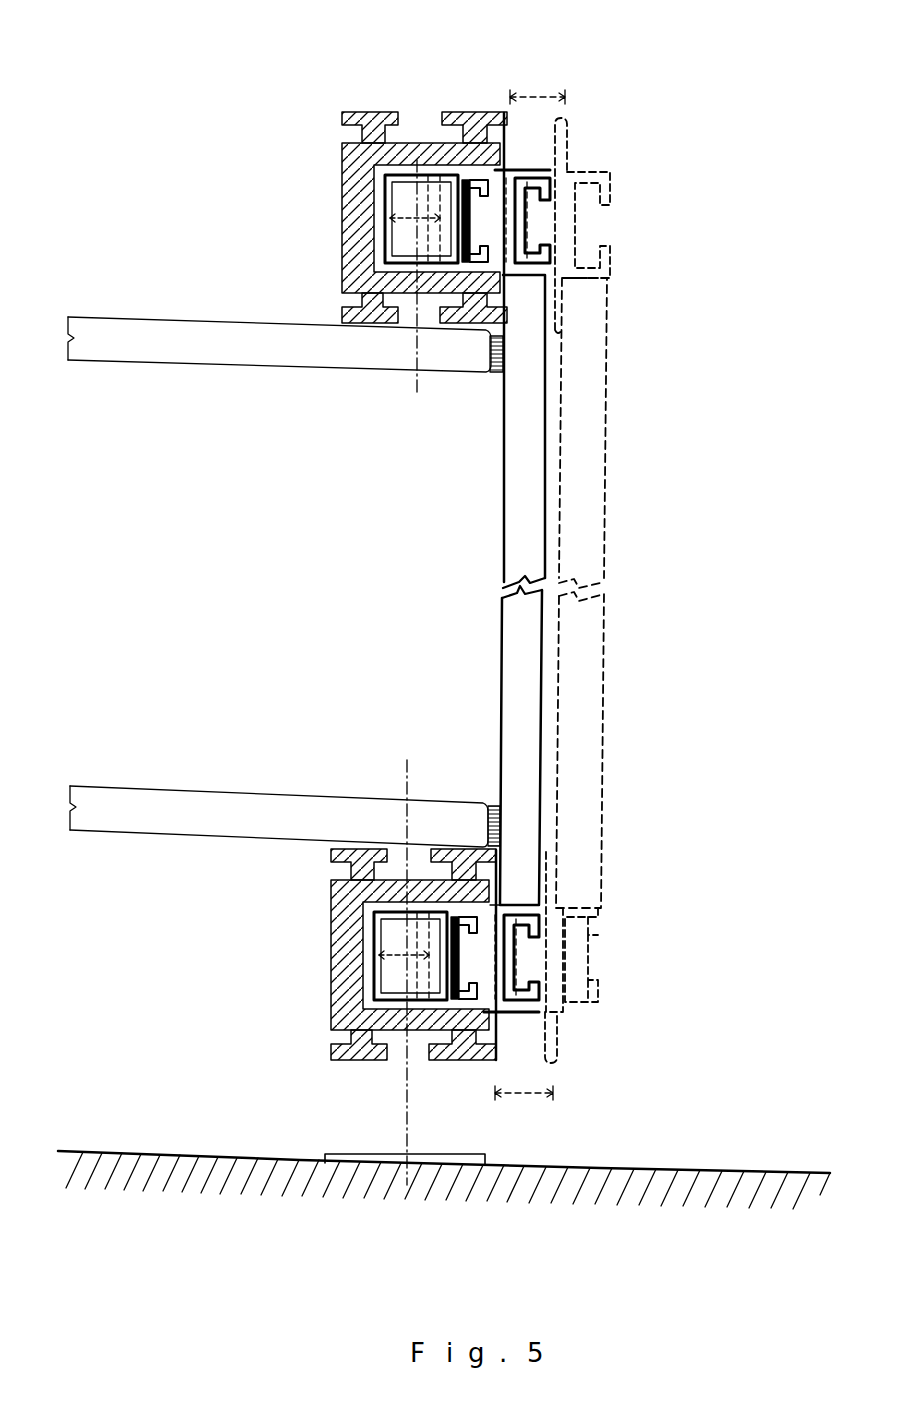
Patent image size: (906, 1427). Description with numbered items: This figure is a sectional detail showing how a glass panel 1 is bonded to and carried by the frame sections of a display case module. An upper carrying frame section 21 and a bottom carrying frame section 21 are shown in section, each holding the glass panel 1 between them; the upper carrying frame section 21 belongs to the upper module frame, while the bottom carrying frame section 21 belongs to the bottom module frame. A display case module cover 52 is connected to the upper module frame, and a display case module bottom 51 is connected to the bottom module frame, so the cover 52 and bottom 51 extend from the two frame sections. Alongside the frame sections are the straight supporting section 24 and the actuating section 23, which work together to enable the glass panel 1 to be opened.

The glass panel 1 is at (527, 433).
The carrying frame section 21 is at (445, 115).
The actuating section 23 is at (362, 1083).
The supporting section 24 is at (540, 153).
The display case module bottom 51 is at (190, 810).
The display case module cover 52 is at (450, 357).